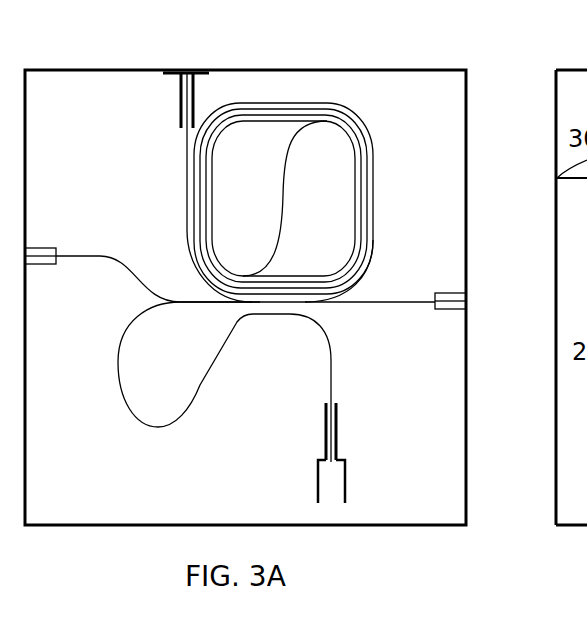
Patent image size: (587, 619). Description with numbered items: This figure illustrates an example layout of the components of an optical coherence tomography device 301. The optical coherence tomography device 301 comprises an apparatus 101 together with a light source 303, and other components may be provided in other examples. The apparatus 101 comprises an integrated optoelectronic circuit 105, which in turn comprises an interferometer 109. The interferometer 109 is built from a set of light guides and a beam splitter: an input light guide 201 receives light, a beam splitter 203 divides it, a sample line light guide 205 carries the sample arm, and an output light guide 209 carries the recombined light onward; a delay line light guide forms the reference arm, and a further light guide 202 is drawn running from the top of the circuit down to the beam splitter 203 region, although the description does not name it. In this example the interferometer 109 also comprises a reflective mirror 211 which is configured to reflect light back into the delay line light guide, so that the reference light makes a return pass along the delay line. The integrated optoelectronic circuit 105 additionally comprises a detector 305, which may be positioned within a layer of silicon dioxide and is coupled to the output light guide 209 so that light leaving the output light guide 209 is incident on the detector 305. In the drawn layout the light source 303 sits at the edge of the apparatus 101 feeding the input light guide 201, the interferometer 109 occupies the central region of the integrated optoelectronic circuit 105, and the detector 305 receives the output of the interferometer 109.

The optical coherence tomography device 301 is at (365, 61).
The apparatus 101 is at (429, 146).
The integrated optoelectronic circuit 105 is at (432, 382).
The interferometer 109 is at (232, 100).
The input light guide 201 is at (115, 257).
The waveguide 202 is at (185, 160).
The beam splitter 203 is at (202, 305).
The sample line light guide 205 is at (400, 298).
The output light guide 209 is at (185, 397).
The reflective mirror 211 is at (187, 67).
The light source 303 is at (45, 248).
The detector 305 is at (334, 480).